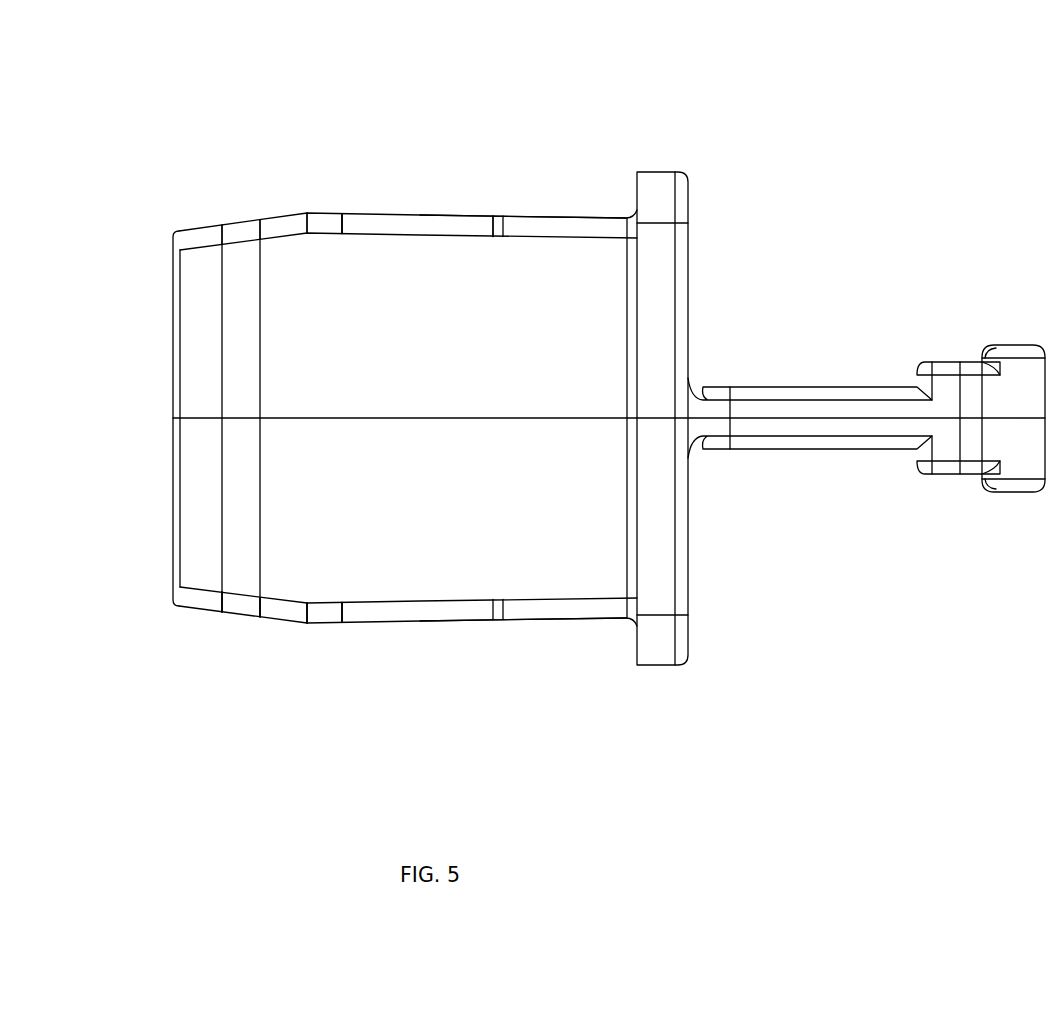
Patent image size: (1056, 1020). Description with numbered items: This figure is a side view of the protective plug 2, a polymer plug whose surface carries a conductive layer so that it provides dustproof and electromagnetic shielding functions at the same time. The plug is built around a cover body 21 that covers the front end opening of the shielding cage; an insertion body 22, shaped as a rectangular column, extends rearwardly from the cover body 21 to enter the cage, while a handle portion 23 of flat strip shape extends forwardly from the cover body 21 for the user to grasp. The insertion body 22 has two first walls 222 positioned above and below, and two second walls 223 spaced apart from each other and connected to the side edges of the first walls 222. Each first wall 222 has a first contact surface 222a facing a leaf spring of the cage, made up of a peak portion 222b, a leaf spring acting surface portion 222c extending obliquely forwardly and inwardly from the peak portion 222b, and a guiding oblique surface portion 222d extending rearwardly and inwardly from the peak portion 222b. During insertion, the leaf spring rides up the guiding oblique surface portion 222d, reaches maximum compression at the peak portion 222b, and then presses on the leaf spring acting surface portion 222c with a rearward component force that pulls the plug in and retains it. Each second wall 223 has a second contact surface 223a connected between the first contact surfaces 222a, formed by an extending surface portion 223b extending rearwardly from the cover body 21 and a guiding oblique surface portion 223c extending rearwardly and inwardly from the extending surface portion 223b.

The protective plug 2 is at (148, 70).
The cover body 21 is at (655, 172).
The insertion body 22 is at (477, 192).
The first wall 222 is at (557, 208).
The first contact surface 222a is at (390, 135).
The peak portion 222b is at (323, 212).
The leaf spring acting surface portion 222c is at (390, 213).
The guiding oblique surface portion 222d is at (239, 222).
The second wall 223 is at (447, 540).
The second contact surface 223a is at (360, 716).
The extending surface portion 223b is at (378, 493).
The guiding oblique surface portion 223c is at (228, 508).
The handle portion 23 is at (838, 388).